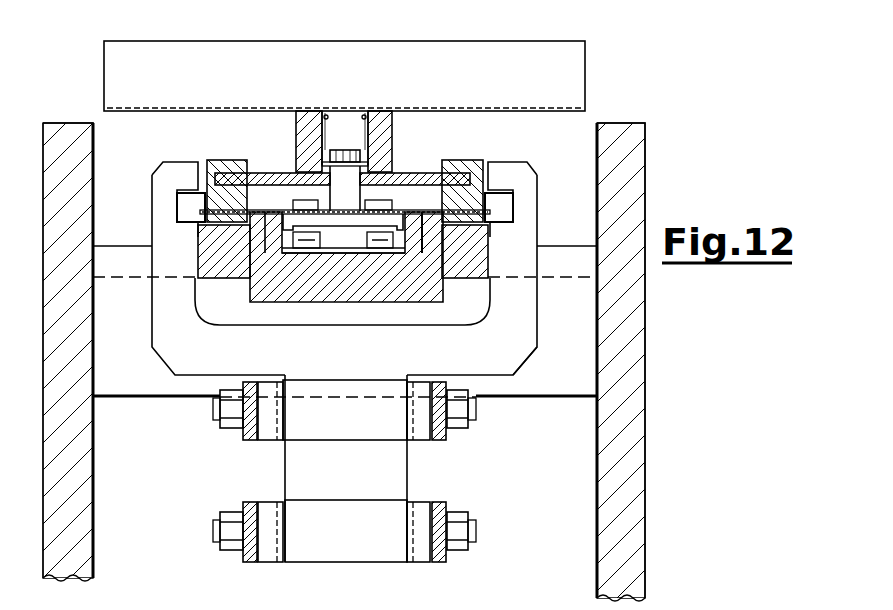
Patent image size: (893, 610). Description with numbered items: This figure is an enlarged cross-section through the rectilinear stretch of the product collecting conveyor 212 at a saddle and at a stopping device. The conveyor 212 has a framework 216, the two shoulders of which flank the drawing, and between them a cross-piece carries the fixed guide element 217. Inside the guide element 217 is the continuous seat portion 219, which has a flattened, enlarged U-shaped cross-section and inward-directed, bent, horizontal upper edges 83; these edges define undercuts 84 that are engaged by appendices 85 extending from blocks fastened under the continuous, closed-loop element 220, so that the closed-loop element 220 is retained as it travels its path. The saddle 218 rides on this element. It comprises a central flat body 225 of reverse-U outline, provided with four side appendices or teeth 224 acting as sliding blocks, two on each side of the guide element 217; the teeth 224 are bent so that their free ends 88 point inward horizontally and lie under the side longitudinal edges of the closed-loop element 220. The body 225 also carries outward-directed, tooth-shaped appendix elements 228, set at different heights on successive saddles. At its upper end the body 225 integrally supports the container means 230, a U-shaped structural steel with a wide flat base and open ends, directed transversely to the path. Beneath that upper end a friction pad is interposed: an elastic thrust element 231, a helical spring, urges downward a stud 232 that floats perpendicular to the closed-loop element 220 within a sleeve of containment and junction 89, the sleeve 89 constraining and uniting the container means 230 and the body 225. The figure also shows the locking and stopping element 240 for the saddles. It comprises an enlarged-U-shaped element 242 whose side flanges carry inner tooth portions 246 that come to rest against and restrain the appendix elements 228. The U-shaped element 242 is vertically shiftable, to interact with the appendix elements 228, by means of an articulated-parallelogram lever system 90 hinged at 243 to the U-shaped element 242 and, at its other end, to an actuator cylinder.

The product collecting conveyor 212 is at (668, 101).
The framework 216 is at (77, 560).
The guide element 217 is at (427, 295).
The saddle 218 is at (589, 74).
The continuous seat portion 219 is at (348, 266).
The continuous, closed-loop element 220 is at (428, 200).
The side appendices or teeth (sliding blocks) 224 is at (480, 187).
The central flat body 225 is at (268, 176).
The appendix elements 228 is at (188, 208).
The container means 230 is at (110, 70).
The elastic thrust element 231 is at (360, 124).
The stud 232 is at (341, 150).
The locking and stopping element 240 is at (163, 372).
The enlarged-U-shaped element 242 is at (531, 351).
The hinge 243 is at (470, 414).
The tooth portions 246 is at (190, 172).
The upper edges 83 is at (430, 226).
The undercuts 84 is at (282, 256).
The appendices 85 is at (402, 246).
The free ends 88 is at (245, 238).
The sleeve of containment and junction 89 is at (387, 147).
The articulated-parallelogram lever system 90 is at (437, 500).